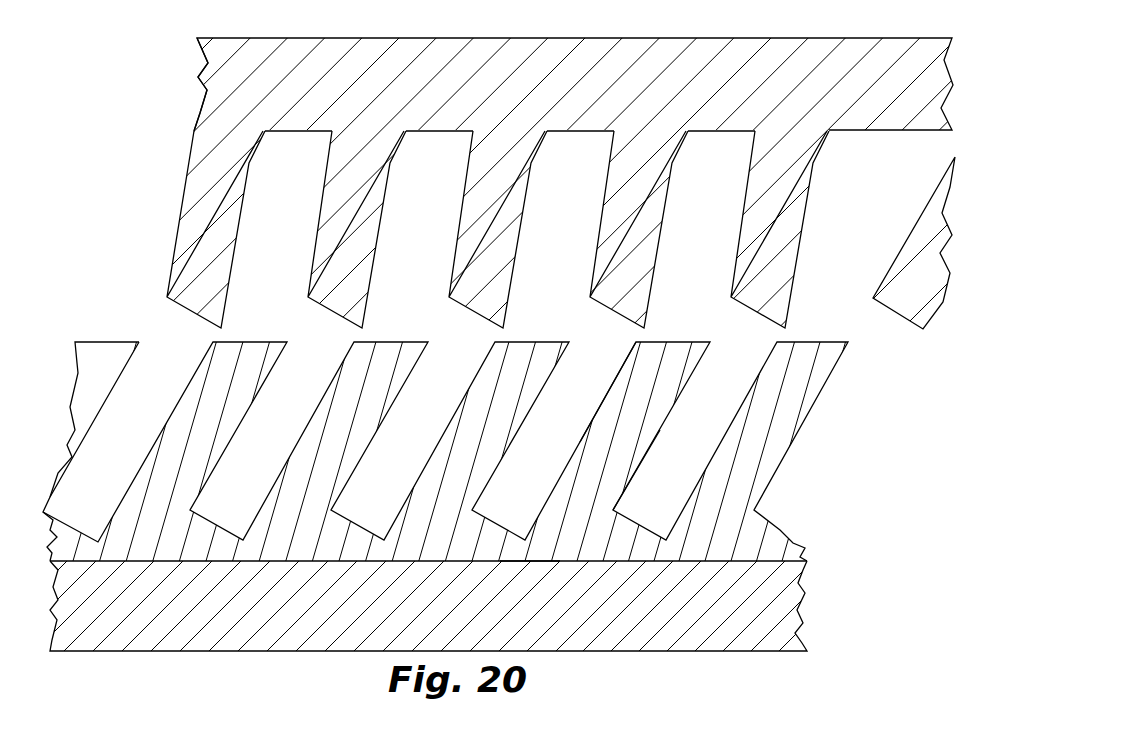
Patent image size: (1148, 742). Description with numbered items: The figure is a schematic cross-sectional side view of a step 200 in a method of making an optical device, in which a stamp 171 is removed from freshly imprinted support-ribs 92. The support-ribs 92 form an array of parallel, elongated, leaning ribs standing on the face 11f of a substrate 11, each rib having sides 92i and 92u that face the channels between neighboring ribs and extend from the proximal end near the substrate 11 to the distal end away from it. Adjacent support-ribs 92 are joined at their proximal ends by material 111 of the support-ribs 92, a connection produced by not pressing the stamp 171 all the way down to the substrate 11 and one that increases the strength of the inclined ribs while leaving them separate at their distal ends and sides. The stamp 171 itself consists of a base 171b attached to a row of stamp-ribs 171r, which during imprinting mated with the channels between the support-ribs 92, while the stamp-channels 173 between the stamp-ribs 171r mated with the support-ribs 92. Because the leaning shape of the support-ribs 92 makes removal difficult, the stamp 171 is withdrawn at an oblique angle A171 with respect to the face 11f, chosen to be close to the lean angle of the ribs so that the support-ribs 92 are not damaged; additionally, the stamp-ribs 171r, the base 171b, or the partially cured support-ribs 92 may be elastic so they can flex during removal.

The stamp 171 is at (612, 89).
The base of the stamp 171b is at (266, 84).
The stamp-ribs 171r is at (905, 303).
The stamp-channels 173 is at (516, 186).
The support-ribs 92 is at (118, 376).
The side of the support-rib 92u is at (607, 397).
The side of the support-rib 92i is at (613, 502).
The material of the support-ribs 111 is at (527, 553).
The substrate 11 is at (445, 616).
The face of the substrate 11f is at (750, 566).
The step 200 is at (908, 647).
The oblique angle A171 is at (143, 174).